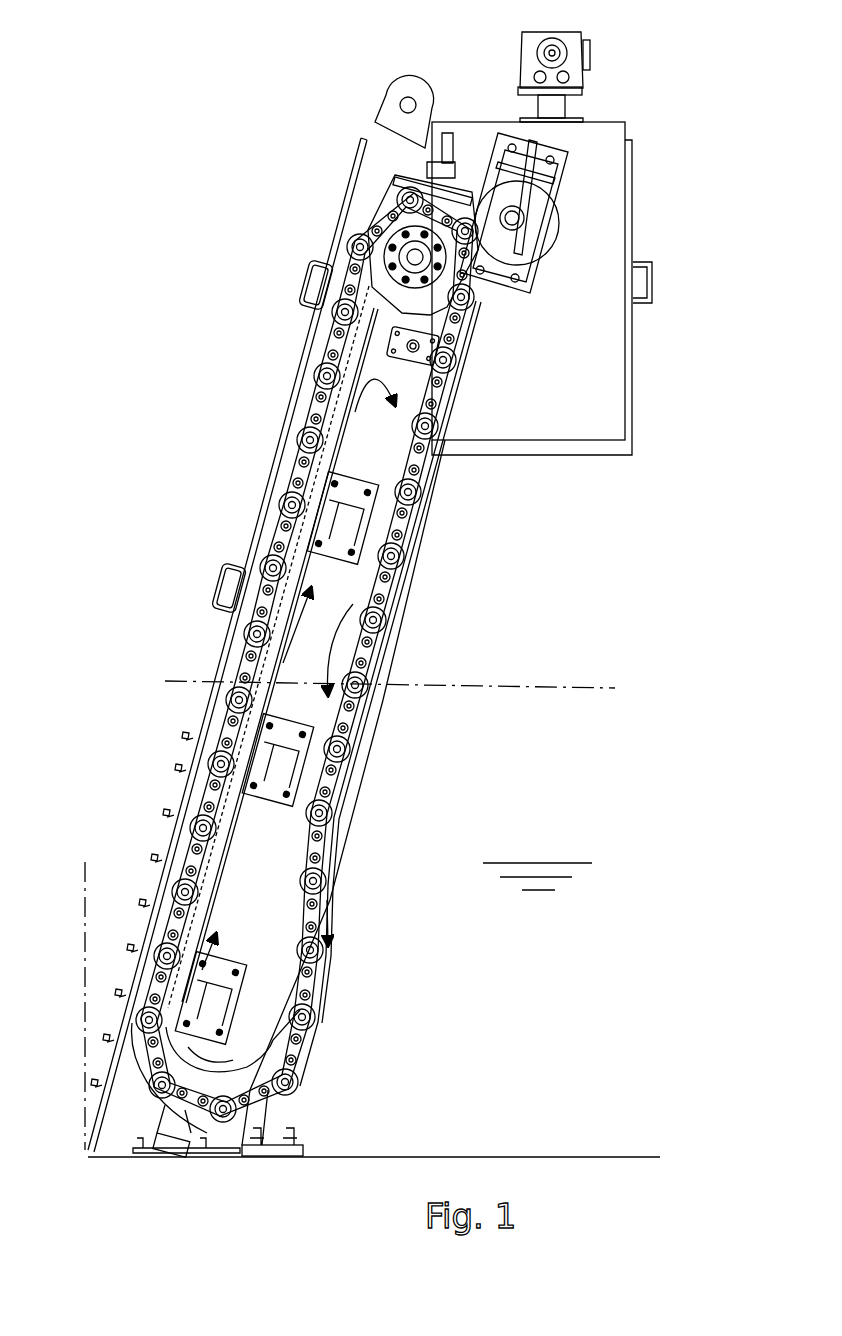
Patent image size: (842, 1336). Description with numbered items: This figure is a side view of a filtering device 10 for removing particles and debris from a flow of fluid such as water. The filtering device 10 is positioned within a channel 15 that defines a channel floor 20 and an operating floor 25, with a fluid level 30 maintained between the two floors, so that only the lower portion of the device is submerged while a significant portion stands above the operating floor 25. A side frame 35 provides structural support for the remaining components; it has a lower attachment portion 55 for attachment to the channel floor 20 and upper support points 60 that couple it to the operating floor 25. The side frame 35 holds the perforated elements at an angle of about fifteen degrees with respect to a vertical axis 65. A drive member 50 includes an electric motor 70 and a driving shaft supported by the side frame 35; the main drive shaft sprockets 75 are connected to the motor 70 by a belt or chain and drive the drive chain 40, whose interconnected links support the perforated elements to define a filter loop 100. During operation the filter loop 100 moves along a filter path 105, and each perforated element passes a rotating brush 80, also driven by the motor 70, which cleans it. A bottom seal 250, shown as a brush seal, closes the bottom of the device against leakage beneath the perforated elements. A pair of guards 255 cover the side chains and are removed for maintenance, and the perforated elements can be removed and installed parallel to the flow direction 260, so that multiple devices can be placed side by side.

The filtering device 10 is at (250, 185).
The channel 15 is at (535, 768).
The channel floor 20 is at (528, 1157).
The operating floor 25 is at (618, 686).
The fluid level 30 is at (548, 856).
The side frame 35 is at (636, 262).
The drive chain 40 is at (452, 328).
The drive member 50 is at (650, 96).
The lower attachment portion 55 is at (273, 1147).
The upper support points 60 is at (537, 458).
The vertical axis 65 is at (85, 950).
The electric motor 70 is at (573, 44).
The main drive shaft sprockets 75 is at (373, 272).
The rotating brush 80 is at (555, 228).
The filter loop 100 is at (320, 845).
The filter path 105 is at (337, 648).
The bottom seal 250 is at (180, 1125).
The guards 255 is at (262, 523).
The flow direction 260 is at (140, 762).